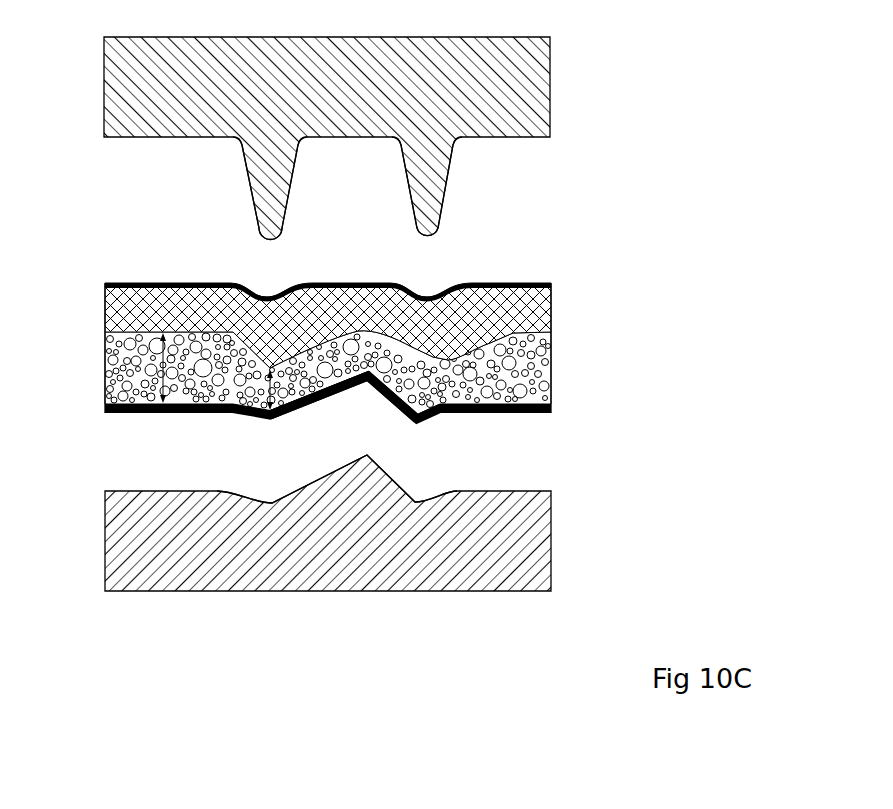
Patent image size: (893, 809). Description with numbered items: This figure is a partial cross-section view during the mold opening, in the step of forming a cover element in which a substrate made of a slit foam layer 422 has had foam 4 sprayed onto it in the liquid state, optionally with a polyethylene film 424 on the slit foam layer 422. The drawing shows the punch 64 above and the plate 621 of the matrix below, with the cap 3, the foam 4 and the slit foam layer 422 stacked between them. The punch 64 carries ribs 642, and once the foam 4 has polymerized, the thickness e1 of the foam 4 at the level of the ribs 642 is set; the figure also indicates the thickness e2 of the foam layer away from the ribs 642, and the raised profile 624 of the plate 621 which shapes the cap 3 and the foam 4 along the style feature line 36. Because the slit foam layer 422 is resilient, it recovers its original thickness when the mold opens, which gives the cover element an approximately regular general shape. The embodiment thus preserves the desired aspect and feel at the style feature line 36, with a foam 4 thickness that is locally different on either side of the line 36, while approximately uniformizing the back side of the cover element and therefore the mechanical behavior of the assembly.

The punch 64 is at (517, 87).
The ribs 642 is at (283, 220).
The polyethylene film 424 is at (105, 284).
The slit foam layer 422 is at (118, 314).
The foam 4 is at (130, 368).
The cap 3 is at (103, 409).
The line 36 is at (363, 382).
The thickness e1 is at (281, 421).
The original thickness e2 is at (157, 410).
The ridge of lower mold 624 is at (385, 470).
The plate 621 is at (515, 548).